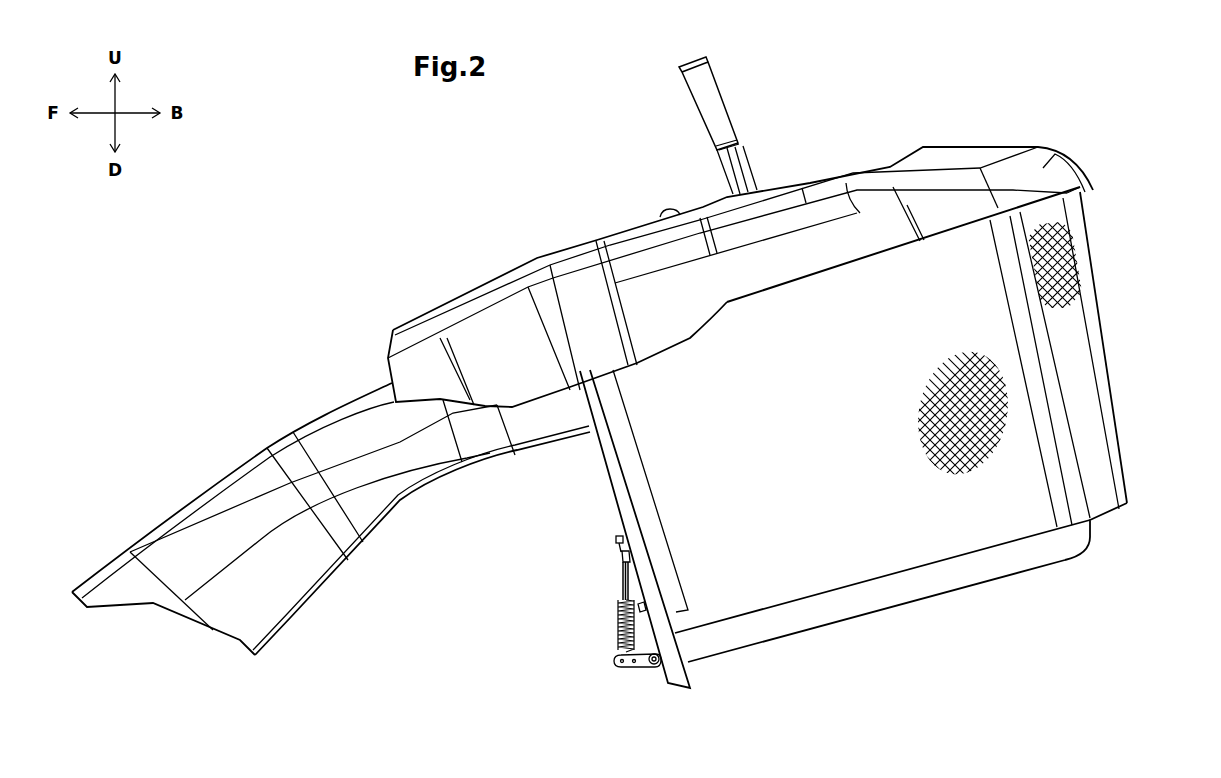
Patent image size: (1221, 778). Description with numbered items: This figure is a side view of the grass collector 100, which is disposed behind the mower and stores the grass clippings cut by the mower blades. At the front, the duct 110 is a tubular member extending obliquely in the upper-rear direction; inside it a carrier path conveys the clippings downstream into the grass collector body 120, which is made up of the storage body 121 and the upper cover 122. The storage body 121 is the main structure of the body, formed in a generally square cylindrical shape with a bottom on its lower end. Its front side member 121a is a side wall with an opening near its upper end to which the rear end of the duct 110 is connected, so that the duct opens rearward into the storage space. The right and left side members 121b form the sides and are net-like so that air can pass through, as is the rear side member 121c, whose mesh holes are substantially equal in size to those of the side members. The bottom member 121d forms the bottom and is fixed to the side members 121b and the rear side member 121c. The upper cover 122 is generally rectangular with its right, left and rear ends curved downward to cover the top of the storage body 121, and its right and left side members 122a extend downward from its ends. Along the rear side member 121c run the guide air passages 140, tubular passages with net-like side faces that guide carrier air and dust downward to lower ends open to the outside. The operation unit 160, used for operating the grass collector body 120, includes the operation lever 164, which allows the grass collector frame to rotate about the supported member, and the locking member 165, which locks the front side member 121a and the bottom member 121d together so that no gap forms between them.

The grass collector 100 is at (639, 379).
The duct 110 is at (237, 493).
The grass collector body 120 is at (1067, 124).
The storage body 121 is at (994, 584).
The front side member 121a is at (608, 490).
The right and left side members 121b is at (882, 528).
The rear side member 121c is at (1094, 522).
The bottom member 121d is at (813, 632).
The upper cover 122 is at (958, 146).
The right and left side members 122a is at (843, 241).
The guide air passages 140 is at (1098, 298).
The operation unit 160 is at (676, 101).
The operation lever 164 is at (727, 101).
The locking member 165 is at (642, 668).